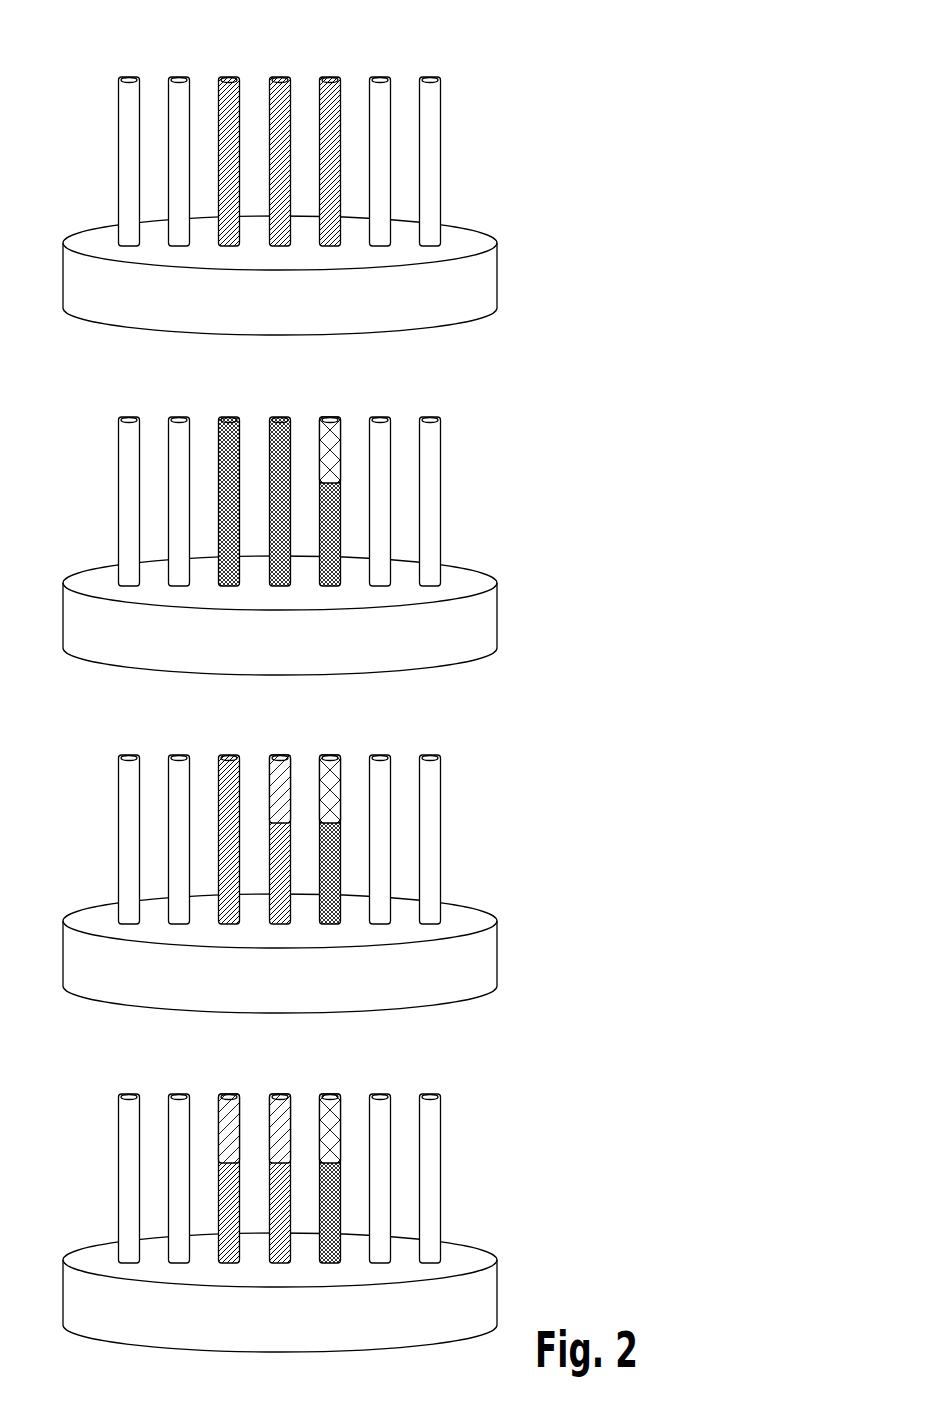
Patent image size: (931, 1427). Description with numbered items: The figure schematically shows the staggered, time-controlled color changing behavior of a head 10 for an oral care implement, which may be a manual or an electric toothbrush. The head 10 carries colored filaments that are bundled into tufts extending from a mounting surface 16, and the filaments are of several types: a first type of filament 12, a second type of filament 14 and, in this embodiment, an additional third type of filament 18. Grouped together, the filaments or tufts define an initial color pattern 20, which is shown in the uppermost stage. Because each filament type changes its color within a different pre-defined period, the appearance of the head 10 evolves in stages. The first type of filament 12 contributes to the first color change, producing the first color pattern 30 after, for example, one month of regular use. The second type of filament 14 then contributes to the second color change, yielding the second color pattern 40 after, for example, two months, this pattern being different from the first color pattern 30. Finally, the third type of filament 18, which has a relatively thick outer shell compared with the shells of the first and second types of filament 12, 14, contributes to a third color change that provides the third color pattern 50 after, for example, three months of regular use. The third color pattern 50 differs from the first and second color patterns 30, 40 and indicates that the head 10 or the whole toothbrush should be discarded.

The head 10 is at (470, 120).
The first type of filament 12 is at (333, 79).
The second type of filament 14 is at (278, 80).
The mounting surface 16 is at (478, 1295).
The third type of filament 18 is at (230, 80).
The initial color pattern 20 is at (452, 213).
The first color pattern 30 is at (448, 520).
The second color pattern 40 is at (447, 860).
The third color pattern 50 is at (447, 1208).